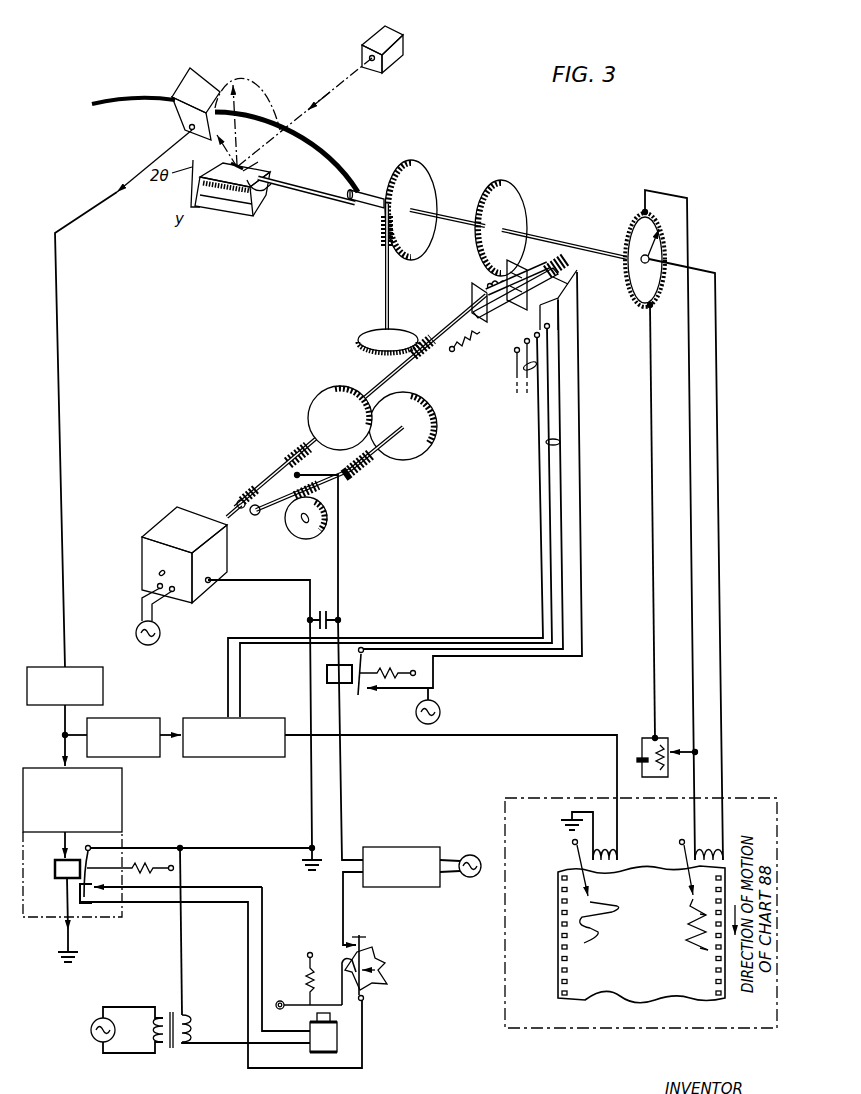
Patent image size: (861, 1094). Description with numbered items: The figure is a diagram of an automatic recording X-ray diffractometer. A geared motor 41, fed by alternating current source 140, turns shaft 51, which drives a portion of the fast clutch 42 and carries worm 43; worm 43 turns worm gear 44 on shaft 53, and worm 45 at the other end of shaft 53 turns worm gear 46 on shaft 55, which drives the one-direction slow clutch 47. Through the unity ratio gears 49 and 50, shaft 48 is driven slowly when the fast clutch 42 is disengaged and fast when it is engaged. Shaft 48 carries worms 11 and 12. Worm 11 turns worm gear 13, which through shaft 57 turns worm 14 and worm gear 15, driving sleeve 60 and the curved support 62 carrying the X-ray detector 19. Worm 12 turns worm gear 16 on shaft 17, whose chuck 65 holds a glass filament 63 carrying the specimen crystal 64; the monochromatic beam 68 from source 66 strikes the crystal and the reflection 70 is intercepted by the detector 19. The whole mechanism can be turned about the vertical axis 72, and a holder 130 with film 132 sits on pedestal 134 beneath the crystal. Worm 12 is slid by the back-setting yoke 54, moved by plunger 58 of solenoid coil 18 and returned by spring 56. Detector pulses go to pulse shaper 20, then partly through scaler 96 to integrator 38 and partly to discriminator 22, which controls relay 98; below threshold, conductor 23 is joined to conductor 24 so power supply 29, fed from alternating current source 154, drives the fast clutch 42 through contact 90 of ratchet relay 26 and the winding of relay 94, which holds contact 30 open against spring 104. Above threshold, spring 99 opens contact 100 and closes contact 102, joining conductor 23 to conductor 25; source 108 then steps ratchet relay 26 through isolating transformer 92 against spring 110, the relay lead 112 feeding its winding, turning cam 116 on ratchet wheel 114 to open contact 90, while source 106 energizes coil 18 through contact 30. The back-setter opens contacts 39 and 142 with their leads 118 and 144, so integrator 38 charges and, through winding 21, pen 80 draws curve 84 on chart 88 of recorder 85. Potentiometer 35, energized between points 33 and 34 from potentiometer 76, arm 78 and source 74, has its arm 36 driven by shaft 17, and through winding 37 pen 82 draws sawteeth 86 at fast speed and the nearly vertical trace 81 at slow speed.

The worm 11 is at (424, 352).
The worm 12 is at (497, 318).
The worm gear 13 is at (360, 346).
The worm 14 is at (380, 236).
The worm gear 15 is at (426, 168).
The worm gear 16 is at (516, 191).
The shaft 17 is at (338, 198).
The solenoid coil 18 is at (570, 272).
The X-ray detector 19 is at (194, 66).
The pulse shaping circuit 20 is at (104, 683).
The winding 21 is at (610, 848).
The discriminator circuit 22 is at (123, 797).
The conductor 23 is at (94, 846).
The conductor 24 is at (208, 904).
The conductor 25 is at (208, 887).
The ratchet relay 26 is at (340, 1033).
The power supply 29 is at (391, 847).
The contact 30 is at (366, 690).
The point 33 is at (648, 208).
The point 34 is at (652, 308).
The potentiometer 35 is at (634, 230).
The contact arm 36 is at (641, 254).
The winding 37 is at (700, 848).
The integrating circuit 38 is at (258, 718).
The contacts 39 is at (560, 313).
The geared motor 41 is at (170, 521).
The fast clutch 42 is at (289, 447).
The worm 43 is at (241, 496).
The worm gear 44 is at (253, 517).
The worm 45 is at (300, 507).
The worm gear 46 is at (306, 540).
The slow clutch 47 is at (374, 481).
The shaft 48 is at (402, 367).
The gear 49 is at (322, 404).
The gear 50 is at (438, 432).
The shaft 51 is at (250, 487).
The shaft 53 is at (290, 494).
The back-setting yoke 54 is at (505, 335).
The shaft 55 is at (356, 492).
The spring 56 is at (478, 323).
The shaft 57 is at (384, 285).
The plunger 58 is at (566, 283).
The sleeve 60 is at (372, 192).
The support 62 is at (118, 99).
The glass filament 63 is at (252, 168).
The specimen crystal 64 is at (239, 163).
The multiple adjustable chuck 65 is at (236, 195).
The X-ray beam source 66 is at (396, 47).
The X-ray beam 68 is at (338, 84).
The reflection 70 is at (199, 141).
The vertical axis 72 is at (240, 94).
The direct current source 74 is at (640, 758).
The potentiometer 76 is at (667, 768).
The adjustable contacting arm 78 is at (690, 750).
The pen 80 is at (590, 883).
The trace 81 is at (690, 906).
The pen 82 is at (689, 874).
The curve 84 is at (596, 934).
The recorder 85 is at (576, 1030).
The sawteeth 86 is at (700, 914).
The chart 88 is at (640, 998).
The contact 90 is at (361, 940).
The isolating transformer 92 is at (175, 1049).
The relay 94 is at (343, 684).
The scaler 96 is at (132, 718).
The relay 98 is at (62, 879).
The spring 99 is at (150, 862).
The contact 100 is at (85, 898).
The contact 102 is at (98, 891).
The spring 104 is at (393, 666).
The alternating current source 106 is at (441, 714).
The alternating current source 108 is at (91, 1031).
The spring 110 is at (306, 976).
The gate lead 112 is at (341, 962).
The ratchet wheel 114 is at (386, 958).
The cam 116 is at (384, 970).
The leads 118 is at (546, 443).
The holder 130 is at (229, 210).
The film 132 is at (266, 188).
The pedestal member 134 is at (220, 200).
The alternating current source 140 is at (161, 633).
The contacts 142 is at (553, 338).
The leads 144 is at (530, 368).
The AC source 154 is at (472, 855).